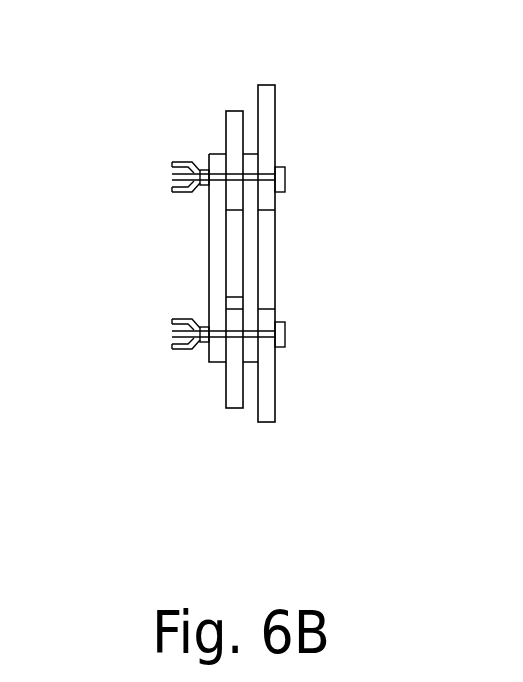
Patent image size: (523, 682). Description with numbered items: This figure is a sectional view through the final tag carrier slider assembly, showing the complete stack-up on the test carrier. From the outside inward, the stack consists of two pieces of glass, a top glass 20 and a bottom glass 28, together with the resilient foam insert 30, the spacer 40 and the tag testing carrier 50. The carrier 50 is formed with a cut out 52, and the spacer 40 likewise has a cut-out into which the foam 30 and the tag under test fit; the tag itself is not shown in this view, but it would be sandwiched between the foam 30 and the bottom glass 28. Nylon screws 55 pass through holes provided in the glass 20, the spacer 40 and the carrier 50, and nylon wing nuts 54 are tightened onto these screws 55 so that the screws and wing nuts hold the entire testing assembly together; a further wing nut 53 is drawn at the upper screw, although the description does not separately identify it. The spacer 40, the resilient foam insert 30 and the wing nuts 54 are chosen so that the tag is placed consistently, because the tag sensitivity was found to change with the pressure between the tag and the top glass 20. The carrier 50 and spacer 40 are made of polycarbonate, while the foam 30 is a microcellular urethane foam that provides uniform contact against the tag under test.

The top glass 20 is at (217, 347).
The bottom glass 28 is at (253, 347).
The resilient foam insert 30 is at (233, 263).
The spacer 40 is at (232, 117).
The tag testing carrier 50 is at (270, 110).
The cut out 52 is at (270, 275).
The upper wing nut 53 is at (203, 165).
The nylon wing nuts 54 is at (185, 347).
The nylon screws 55 is at (283, 333).